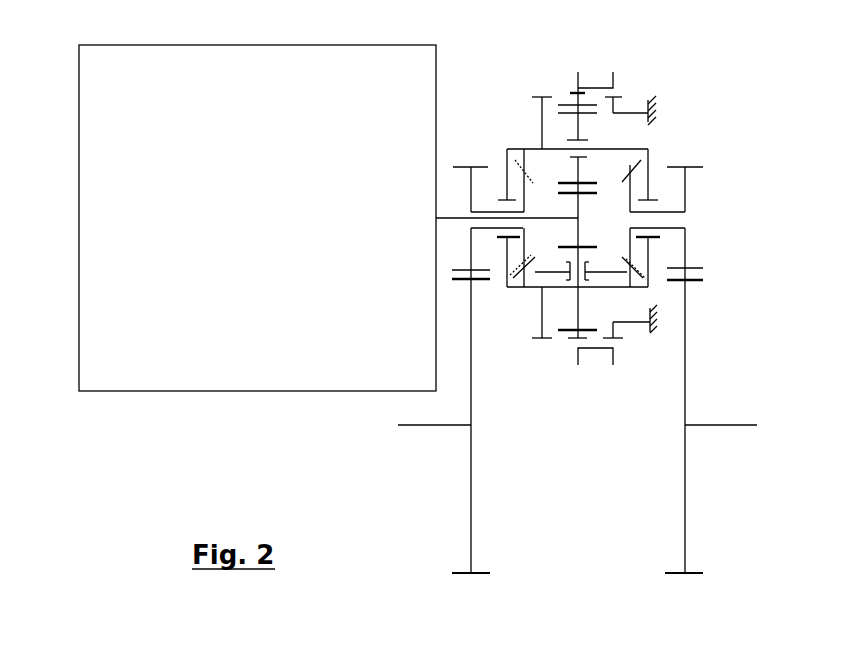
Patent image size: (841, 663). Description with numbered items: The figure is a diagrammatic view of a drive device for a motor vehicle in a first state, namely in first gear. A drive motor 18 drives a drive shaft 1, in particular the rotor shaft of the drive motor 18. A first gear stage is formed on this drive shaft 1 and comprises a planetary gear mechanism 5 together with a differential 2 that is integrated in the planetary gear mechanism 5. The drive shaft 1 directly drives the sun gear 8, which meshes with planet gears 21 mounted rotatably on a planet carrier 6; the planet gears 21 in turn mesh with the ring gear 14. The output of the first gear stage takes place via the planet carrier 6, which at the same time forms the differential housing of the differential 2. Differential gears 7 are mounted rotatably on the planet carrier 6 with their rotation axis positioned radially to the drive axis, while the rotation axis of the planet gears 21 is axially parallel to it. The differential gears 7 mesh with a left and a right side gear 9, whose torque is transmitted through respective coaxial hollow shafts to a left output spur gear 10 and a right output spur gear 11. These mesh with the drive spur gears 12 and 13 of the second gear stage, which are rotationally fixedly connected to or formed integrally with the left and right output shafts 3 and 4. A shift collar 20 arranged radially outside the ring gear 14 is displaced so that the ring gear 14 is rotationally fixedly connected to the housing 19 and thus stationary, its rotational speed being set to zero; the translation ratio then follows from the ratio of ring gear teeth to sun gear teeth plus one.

The drive shaft 1 is at (445, 216).
The differential 2 is at (653, 294).
The left output shaft 3 is at (428, 428).
The right output shaft 4 is at (729, 428).
The planetary gear mechanism 5 is at (601, 160).
The planet carrier 6 is at (527, 147).
The differential gears 7 is at (534, 273).
The sun gear 8 is at (579, 240).
The side gear 9 is at (634, 245).
The left output spur gear 10 is at (478, 166).
The right output spur gear 11 is at (689, 193).
The left drive spur gear 12 is at (473, 501).
The right drive spur gear 13 is at (683, 501).
The ring gear 14 is at (566, 92).
The drive motor 18 is at (257, 218).
The housing 19 is at (668, 105).
The shift collar 20 is at (616, 76).
The planet gears 21 is at (586, 130).